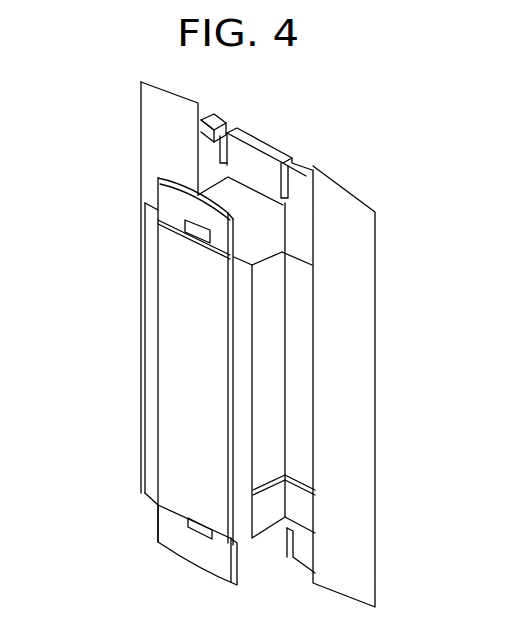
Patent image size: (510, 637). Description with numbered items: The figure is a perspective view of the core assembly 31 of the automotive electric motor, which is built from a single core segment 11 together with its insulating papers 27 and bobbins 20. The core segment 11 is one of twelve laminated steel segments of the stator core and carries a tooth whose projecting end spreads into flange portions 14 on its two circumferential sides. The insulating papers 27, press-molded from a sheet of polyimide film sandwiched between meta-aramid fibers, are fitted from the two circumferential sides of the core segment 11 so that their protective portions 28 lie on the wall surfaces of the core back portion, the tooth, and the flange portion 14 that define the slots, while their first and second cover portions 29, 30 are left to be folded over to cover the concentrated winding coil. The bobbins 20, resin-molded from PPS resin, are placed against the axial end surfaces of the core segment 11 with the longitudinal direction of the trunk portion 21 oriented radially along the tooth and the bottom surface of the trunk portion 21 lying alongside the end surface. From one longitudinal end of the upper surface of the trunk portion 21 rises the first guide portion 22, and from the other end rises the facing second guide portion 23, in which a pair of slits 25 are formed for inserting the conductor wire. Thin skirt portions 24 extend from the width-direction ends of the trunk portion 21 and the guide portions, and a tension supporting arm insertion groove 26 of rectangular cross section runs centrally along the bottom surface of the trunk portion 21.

The core segment 11 is at (181, 400).
The flange portion 14 is at (170, 445).
The bobbin 20 is at (265, 141).
The trunk portion 21 is at (258, 212).
The first guide portion 22 is at (153, 187).
The second guide portion 23 is at (243, 138).
The skirt portion 24 is at (293, 242).
The slit 25 is at (298, 162).
The tension supporting arm insertion groove 26 is at (200, 238).
The insulating paper 27 is at (141, 153).
The protective portion 28 is at (273, 398).
The first cover portion 29 is at (247, 447).
The second cover portion 30 is at (362, 463).
The core assembly 31 is at (429, 85).